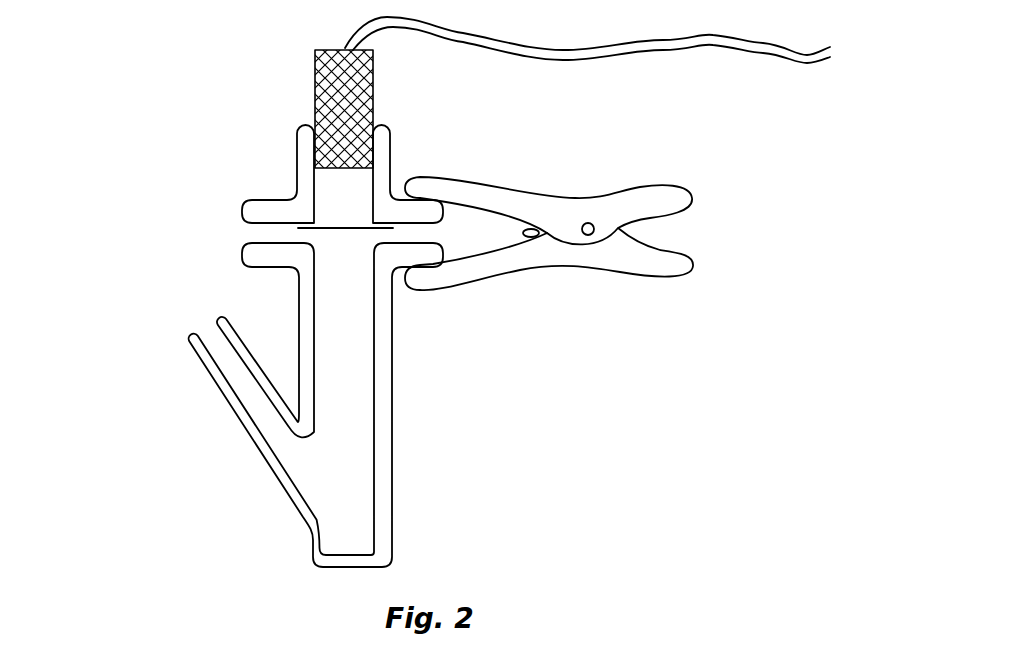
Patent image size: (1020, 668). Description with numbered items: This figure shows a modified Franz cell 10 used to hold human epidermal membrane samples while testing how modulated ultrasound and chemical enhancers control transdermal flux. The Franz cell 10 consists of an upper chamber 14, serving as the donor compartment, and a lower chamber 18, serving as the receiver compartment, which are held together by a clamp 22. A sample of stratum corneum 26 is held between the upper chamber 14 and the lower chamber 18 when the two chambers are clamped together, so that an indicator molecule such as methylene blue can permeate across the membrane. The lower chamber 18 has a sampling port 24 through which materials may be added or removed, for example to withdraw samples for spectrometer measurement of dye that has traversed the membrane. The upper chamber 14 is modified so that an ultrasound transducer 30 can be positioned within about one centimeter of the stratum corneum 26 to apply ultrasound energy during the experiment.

The Franz cell 10 is at (132, 130).
The upper chamber 14 is at (297, 168).
The lower chamber 18 is at (392, 472).
The clamp 22 is at (630, 188).
The sampling port 24 is at (212, 335).
The stratum corneum 26 is at (298, 230).
The ultrasound transducer 30 is at (373, 93).